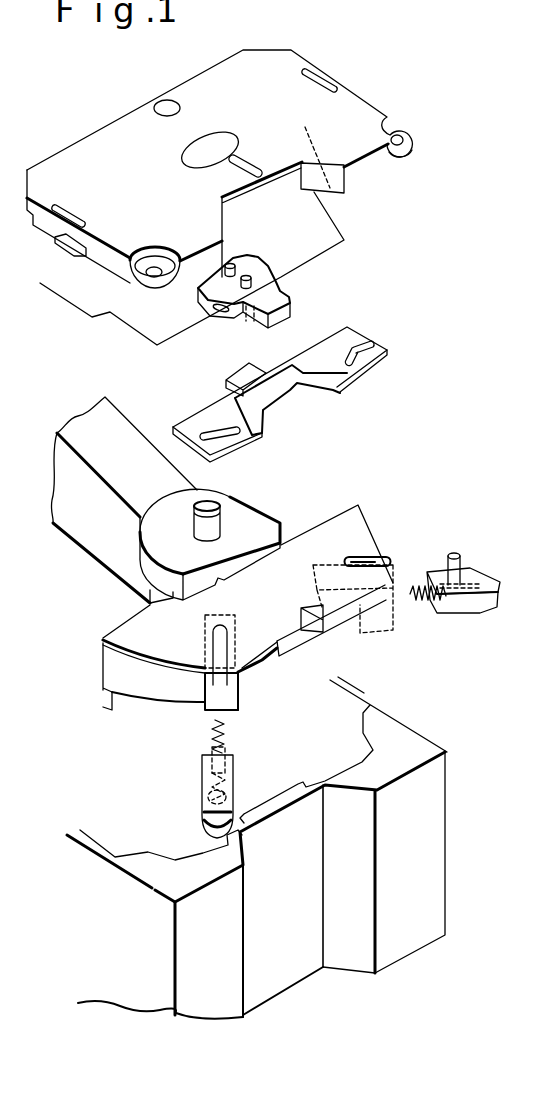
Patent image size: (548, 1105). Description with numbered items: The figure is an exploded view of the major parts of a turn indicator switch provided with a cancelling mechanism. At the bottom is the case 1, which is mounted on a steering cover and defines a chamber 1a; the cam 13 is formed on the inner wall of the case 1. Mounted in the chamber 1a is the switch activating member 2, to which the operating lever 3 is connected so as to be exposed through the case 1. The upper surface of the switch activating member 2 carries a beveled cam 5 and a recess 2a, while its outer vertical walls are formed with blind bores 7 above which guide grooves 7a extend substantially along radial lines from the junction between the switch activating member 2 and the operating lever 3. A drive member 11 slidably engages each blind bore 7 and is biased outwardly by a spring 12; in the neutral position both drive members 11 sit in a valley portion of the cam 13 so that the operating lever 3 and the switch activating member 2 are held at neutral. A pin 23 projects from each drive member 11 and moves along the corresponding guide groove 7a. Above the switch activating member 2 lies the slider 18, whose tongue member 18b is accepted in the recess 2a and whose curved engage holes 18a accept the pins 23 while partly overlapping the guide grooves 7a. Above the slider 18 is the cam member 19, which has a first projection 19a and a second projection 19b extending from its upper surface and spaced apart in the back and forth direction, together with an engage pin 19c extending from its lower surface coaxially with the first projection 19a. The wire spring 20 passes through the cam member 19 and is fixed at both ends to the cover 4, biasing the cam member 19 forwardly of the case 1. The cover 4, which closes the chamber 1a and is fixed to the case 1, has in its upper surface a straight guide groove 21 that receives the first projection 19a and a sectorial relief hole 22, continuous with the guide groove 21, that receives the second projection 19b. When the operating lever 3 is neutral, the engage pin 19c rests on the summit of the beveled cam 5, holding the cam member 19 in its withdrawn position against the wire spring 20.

The case 1 is at (447, 847).
The chamber 1a is at (108, 836).
The switch activating member 2 is at (366, 532).
The recess 2a is at (240, 570).
The operating lever 3 is at (130, 438).
The cover 4 is at (344, 87).
The beveled cam 5 is at (306, 640).
The blind bores 7 is at (356, 633).
The guide grooves 7a is at (372, 559).
The drive member 11 is at (466, 614).
The springs 12 is at (422, 604).
The cam 13 is at (362, 714).
The slider 18 is at (355, 380).
The engage holes 18a is at (372, 342).
The tongue member 18b is at (226, 380).
The cam member 19 is at (286, 292).
The first projection 19a is at (251, 276).
The second projection 19b is at (231, 263).
The engage pin 19c is at (250, 322).
The wire spring 20 is at (333, 221).
The straight guide groove 21 is at (230, 170).
The sectorial relief hole 22 is at (222, 143).
The pins 23 is at (458, 565).